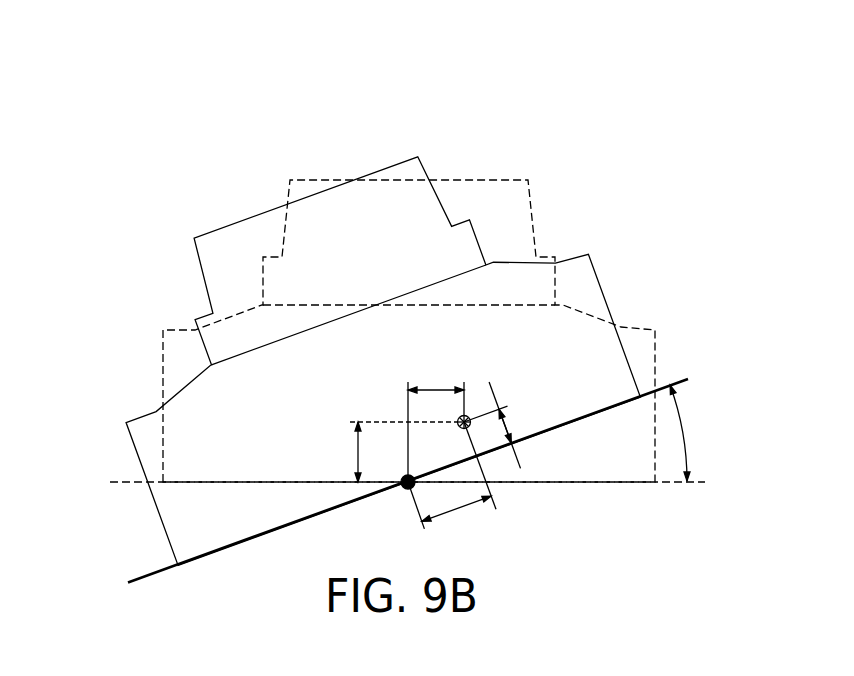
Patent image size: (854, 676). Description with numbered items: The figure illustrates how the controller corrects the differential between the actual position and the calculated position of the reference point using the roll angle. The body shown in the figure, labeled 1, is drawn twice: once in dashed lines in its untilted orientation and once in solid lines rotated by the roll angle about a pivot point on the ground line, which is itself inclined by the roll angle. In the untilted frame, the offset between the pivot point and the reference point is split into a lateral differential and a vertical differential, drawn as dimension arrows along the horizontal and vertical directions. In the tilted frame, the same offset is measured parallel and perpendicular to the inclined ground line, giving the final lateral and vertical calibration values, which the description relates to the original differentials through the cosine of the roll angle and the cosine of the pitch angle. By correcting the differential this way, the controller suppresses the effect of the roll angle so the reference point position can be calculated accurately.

The vehicle body / object being aligned 1 is at (213, 167).